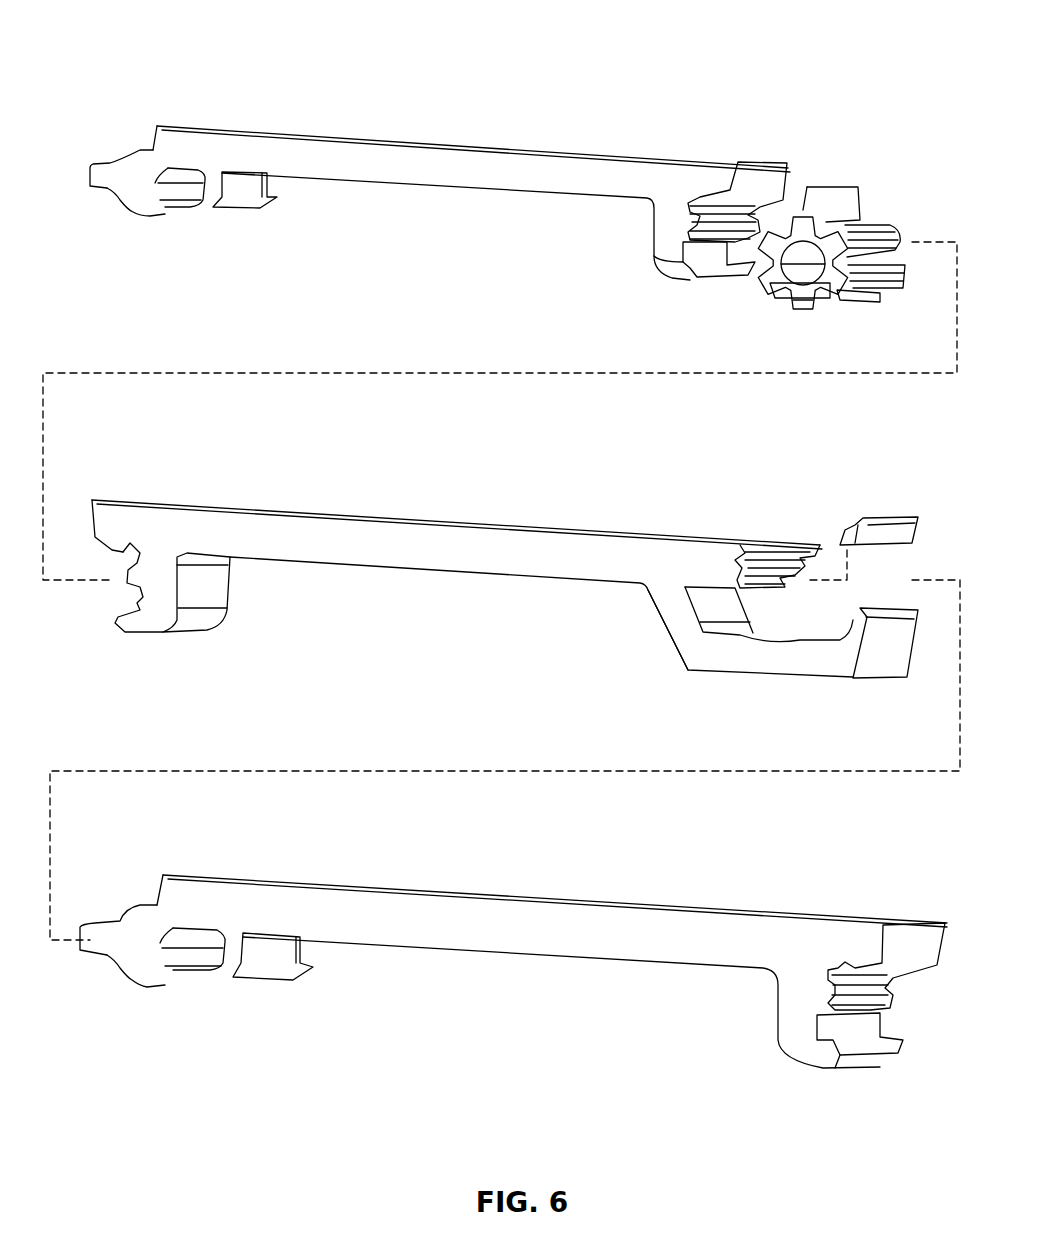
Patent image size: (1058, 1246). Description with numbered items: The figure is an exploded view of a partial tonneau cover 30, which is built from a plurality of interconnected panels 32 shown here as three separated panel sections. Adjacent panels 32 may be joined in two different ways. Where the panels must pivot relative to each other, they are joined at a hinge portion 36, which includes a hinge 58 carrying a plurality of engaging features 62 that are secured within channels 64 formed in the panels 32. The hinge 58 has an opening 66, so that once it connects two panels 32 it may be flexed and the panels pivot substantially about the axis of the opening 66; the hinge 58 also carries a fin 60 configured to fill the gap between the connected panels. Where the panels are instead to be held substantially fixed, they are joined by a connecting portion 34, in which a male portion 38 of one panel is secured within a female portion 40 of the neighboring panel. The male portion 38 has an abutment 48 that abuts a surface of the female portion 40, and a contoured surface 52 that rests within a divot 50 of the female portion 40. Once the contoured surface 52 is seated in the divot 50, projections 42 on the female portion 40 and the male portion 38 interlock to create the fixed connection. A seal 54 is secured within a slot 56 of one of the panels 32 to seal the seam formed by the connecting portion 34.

The tonneau cover 30 is at (530, 72).
The panels 32 is at (375, 150).
The connecting portion 34 is at (895, 475).
The hinge portion 36 is at (887, 145).
The male portion 38 is at (132, 190).
The female portion 40 is at (703, 655).
The projections 42 is at (215, 200).
The abutment 48 is at (98, 173).
The divot 50 is at (772, 645).
The contoured surface 52 is at (136, 218).
The seal 54 is at (863, 540).
The slot 56 is at (743, 558).
The hinge 58 is at (773, 278).
The fin 60 is at (808, 200).
The engaging features 62 is at (767, 230).
The channels 64 is at (698, 197).
The opening 66 is at (808, 272).